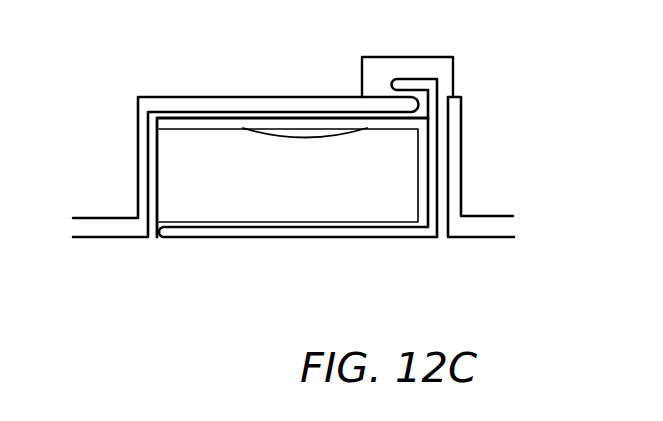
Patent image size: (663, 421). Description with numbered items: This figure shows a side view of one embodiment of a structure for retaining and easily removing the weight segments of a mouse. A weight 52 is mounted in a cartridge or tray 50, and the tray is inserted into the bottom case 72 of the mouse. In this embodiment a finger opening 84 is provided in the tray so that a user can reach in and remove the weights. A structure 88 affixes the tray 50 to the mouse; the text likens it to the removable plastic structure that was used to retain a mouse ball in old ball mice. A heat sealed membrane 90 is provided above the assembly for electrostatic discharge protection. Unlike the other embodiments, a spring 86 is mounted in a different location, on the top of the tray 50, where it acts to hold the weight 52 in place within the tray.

The cartridge or tray 50 is at (300, 203).
The weight 52 is at (227, 233).
The bottom case 72 is at (110, 228).
The finger opening 84 is at (410, 232).
The spring 86 is at (307, 130).
The structure 88 is at (400, 83).
The heat sealed membrane 90 is at (433, 66).